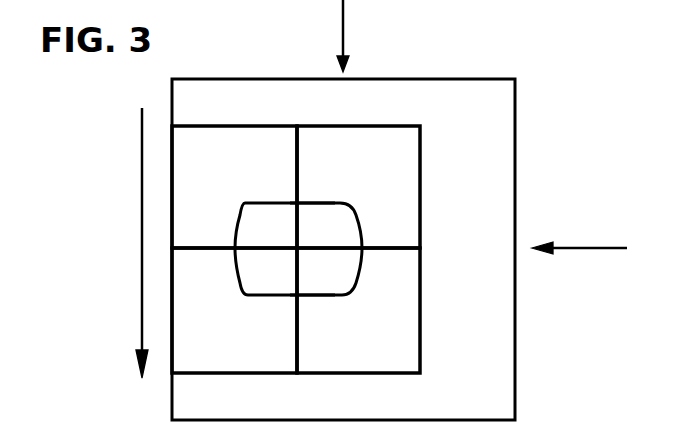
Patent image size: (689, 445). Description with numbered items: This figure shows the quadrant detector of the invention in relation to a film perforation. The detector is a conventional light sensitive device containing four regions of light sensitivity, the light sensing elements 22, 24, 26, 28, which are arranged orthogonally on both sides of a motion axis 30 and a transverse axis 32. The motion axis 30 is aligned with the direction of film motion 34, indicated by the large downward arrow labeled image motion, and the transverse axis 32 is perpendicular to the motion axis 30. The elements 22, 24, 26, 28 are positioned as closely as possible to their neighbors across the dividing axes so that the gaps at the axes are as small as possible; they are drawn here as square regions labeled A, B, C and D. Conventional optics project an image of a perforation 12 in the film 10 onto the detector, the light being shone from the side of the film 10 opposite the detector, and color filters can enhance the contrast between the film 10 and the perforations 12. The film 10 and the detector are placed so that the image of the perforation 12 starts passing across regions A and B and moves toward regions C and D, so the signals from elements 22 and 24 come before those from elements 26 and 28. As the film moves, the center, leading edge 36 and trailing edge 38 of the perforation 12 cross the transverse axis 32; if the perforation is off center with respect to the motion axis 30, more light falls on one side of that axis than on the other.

The film 10 is at (480, 79).
The perforation 12 is at (358, 229).
The light sensing element 22 is at (246, 126).
The light sensing element 24 is at (377, 126).
The light sensing element 26 is at (364, 374).
The light sensing element 28 is at (218, 374).
The motion axis 30 is at (343, 15).
The transverse axis 32 is at (580, 248).
The direction of film motion 34 is at (138, 138).
The leading edge 36 is at (312, 294).
The trailing edge 38 is at (305, 205).